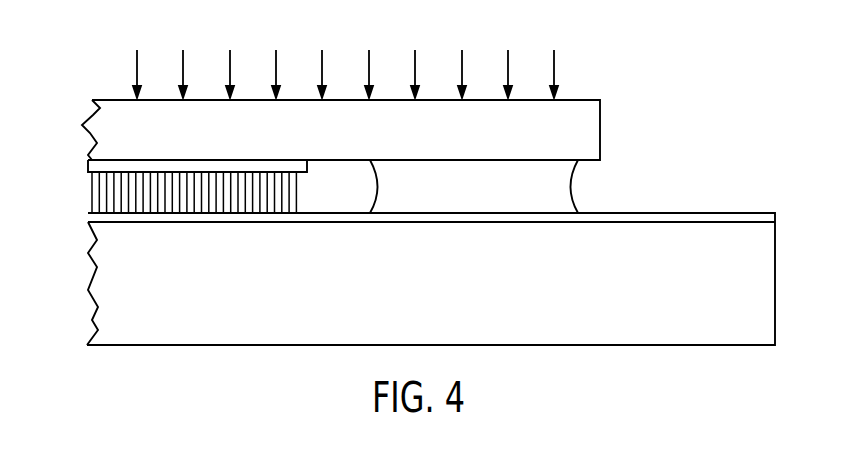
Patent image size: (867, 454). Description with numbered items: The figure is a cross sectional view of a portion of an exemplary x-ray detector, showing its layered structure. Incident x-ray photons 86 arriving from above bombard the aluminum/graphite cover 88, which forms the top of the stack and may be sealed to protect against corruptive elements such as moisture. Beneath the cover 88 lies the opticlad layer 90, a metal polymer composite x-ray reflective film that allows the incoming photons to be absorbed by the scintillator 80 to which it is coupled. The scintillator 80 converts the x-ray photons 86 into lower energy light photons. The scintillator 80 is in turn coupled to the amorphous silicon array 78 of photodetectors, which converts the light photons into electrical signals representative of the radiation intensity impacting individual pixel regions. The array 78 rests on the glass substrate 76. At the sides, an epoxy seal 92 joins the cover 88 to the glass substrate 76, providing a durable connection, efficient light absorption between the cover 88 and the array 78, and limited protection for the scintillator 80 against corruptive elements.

The glass substrate 76 is at (727, 229).
The amorphous silicon array 78 is at (88, 218).
The scintillator 80 is at (97, 191).
The x-ray photons 86 is at (433, 57).
The aluminum/graphite cover 88 is at (567, 132).
The opticlad layer 90 is at (88, 166).
The epoxy seal 92 is at (567, 193).